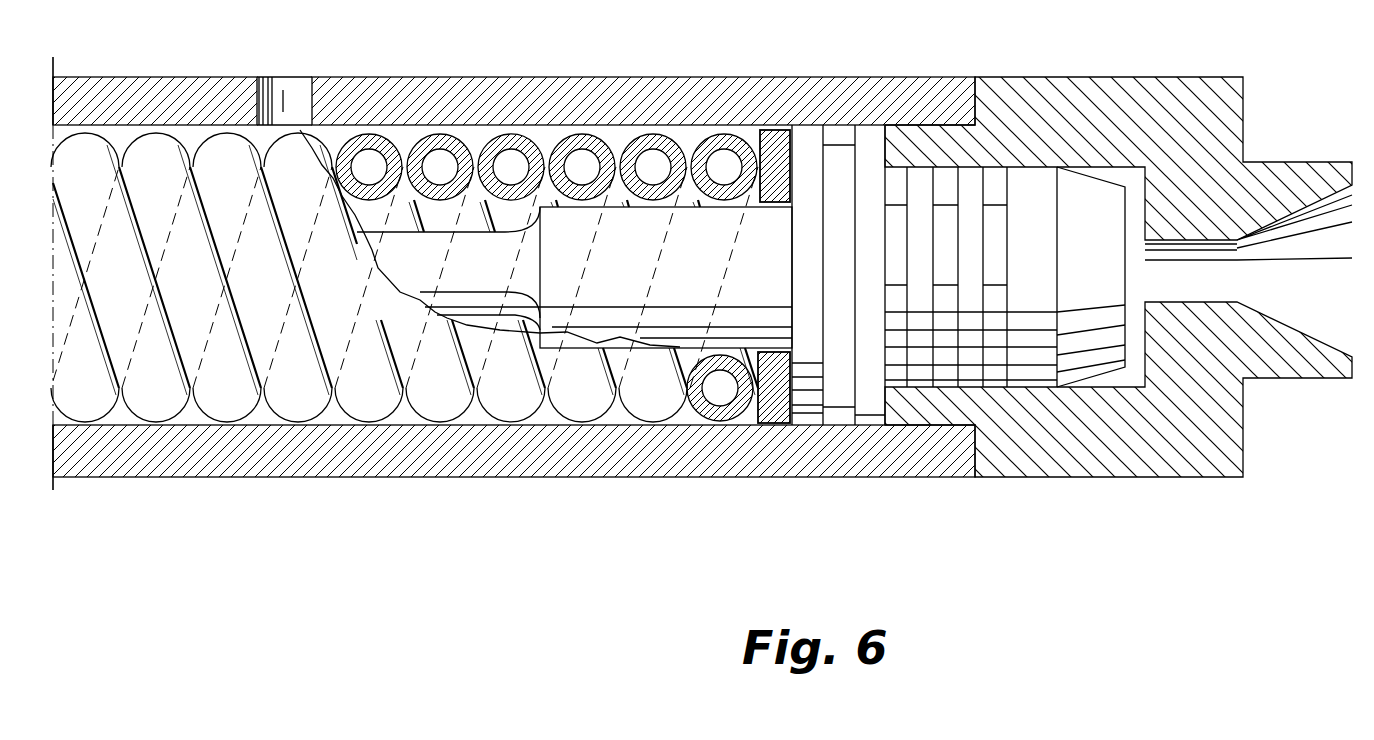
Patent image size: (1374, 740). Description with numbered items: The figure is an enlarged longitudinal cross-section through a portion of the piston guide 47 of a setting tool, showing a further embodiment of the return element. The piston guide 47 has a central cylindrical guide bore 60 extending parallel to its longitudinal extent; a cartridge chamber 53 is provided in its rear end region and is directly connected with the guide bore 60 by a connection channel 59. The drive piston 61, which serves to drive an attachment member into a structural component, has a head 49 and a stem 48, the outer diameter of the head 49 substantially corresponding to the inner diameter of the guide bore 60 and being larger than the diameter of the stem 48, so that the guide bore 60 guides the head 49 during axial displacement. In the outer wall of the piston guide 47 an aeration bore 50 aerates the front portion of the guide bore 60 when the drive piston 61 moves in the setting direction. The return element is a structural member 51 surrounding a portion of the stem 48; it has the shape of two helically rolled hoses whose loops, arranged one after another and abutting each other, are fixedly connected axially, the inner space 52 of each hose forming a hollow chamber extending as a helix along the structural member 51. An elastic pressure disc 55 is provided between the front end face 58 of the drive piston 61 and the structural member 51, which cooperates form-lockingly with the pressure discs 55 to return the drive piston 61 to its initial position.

The piston guide 47 is at (216, 95).
The stem 48 is at (458, 284).
The head 49 is at (870, 142).
The aeration bore 50 is at (288, 95).
The structural member 51 is at (158, 385).
The inner space 52 is at (443, 138).
The cartridge chamber 53 is at (1330, 222).
The pressure disc 55 is at (775, 138).
The end face 58 is at (785, 395).
The connection channel 59 is at (1183, 294).
The guide bore 60 is at (612, 137).
The drive piston 61 is at (735, 365).